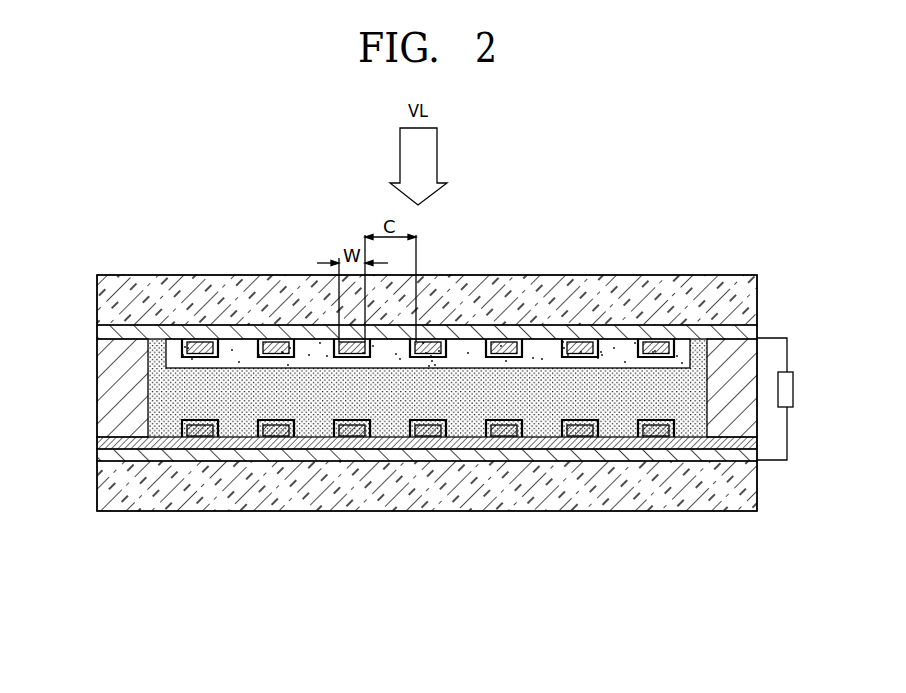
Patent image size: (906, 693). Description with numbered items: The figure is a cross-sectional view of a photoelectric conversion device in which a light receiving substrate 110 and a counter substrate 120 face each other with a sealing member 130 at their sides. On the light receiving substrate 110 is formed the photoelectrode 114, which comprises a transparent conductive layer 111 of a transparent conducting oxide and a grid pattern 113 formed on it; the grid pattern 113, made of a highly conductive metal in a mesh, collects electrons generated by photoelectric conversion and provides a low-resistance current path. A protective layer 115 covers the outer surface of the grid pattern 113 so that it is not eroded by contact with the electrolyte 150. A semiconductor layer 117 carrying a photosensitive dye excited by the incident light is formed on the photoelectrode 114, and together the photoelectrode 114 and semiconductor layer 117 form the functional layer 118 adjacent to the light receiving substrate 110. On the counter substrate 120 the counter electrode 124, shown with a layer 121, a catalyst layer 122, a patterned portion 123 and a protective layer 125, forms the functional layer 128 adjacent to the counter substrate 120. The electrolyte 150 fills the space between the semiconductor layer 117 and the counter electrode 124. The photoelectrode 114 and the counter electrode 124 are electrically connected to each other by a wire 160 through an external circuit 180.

The light receiving substrate 110 is at (102, 297).
The transparent conductive layer 111 is at (148, 333).
The grid pattern 113 is at (201, 345).
The photoelectrode 114 is at (427, 273).
The protective layer 115 is at (220, 339).
The semiconductor layer 117 is at (312, 346).
The functional layer 118 is at (427, 260).
The counter substrate 120 is at (102, 490).
The second conductive layer 121 is at (143, 445).
The catalyst layer 122 is at (116, 452).
The second electrode pattern 123 is at (200, 430).
The counter electrode 124 is at (422, 512).
The protective layer 125 is at (217, 437).
The functional layer 128 is at (422, 530).
The sealing member 130 is at (102, 366).
The electrolyte 150 is at (163, 398).
The wire 160 is at (775, 334).
The external circuit 180 is at (793, 372).